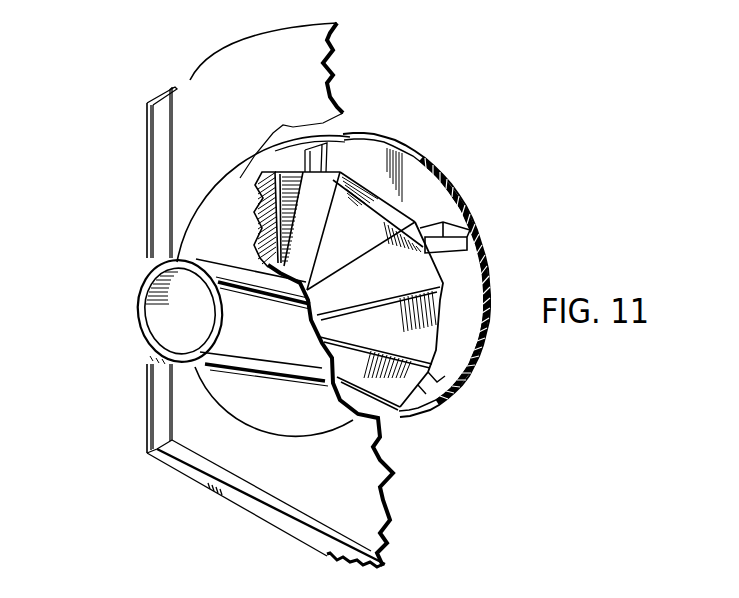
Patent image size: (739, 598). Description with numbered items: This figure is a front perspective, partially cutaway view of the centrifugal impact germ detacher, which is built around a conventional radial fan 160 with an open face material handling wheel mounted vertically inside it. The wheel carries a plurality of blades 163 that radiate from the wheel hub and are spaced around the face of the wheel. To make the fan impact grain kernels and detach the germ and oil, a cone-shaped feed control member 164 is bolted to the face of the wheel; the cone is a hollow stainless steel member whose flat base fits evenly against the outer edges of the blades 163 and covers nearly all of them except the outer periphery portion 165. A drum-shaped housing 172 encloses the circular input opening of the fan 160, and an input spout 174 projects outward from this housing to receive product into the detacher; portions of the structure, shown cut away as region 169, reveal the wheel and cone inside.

The radial fan 160 is at (200, 77).
The broken-away housing portion 169 is at (354, 89).
The drum-shaped housing 172 is at (228, 207).
The input spout 174 is at (140, 320).
The blades 163 is at (325, 145).
The cone-shaped feed control member 164 is at (390, 210).
The outer periphery portion 165 is at (423, 281).